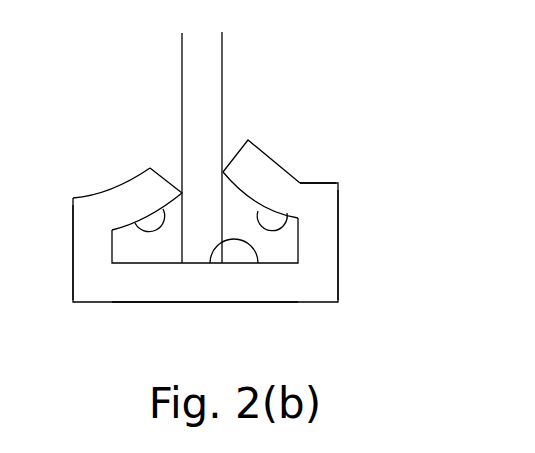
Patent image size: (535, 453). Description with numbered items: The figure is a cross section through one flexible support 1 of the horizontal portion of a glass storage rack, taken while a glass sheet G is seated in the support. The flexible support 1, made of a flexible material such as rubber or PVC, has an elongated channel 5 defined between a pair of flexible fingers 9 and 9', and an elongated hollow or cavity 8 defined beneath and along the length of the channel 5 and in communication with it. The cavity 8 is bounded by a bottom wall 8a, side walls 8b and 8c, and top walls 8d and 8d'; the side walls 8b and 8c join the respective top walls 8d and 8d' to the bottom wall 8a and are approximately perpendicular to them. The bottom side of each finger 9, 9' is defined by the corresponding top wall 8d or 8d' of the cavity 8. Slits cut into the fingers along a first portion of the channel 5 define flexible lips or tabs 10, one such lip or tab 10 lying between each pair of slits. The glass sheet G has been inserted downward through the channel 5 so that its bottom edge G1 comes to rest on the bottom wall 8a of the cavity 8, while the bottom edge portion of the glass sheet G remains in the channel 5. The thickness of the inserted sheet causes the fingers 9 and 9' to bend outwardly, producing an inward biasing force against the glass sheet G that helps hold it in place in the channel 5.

The flexible support 1 is at (386, 153).
The elongated channel 5 is at (155, 130).
The hollow or cavity 8 is at (122, 245).
The bottom wall 8a is at (148, 263).
The side wall 8b is at (298, 243).
The side wall 8c is at (132, 248).
The top wall 8d is at (319, 167).
The top wall 8d' is at (103, 180).
The flexible finger 9 is at (279, 153).
The flexible finger 9' is at (122, 173).
The flexible lip or tab 10 is at (273, 162).
The glass sheet G is at (219, 53).
The bottom edge G1 is at (258, 263).